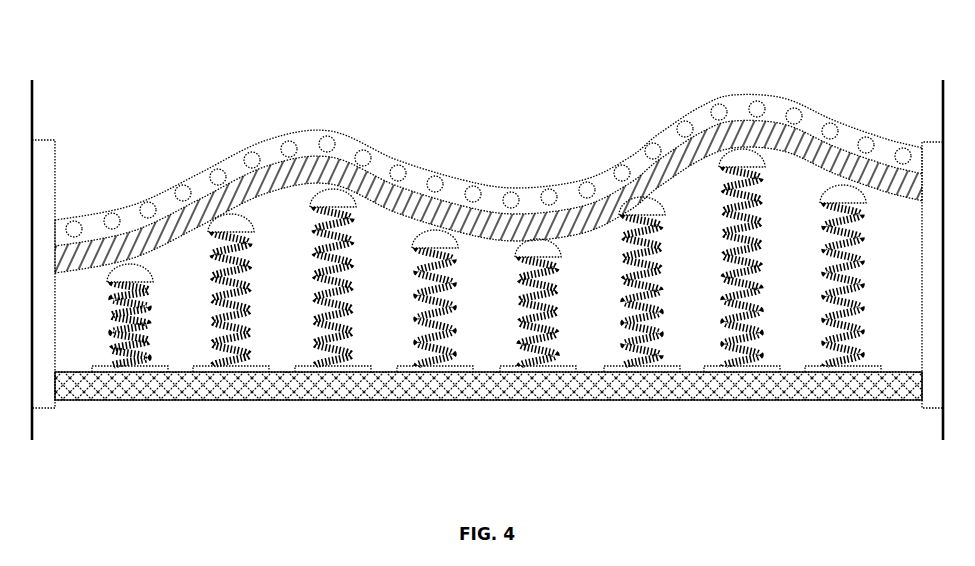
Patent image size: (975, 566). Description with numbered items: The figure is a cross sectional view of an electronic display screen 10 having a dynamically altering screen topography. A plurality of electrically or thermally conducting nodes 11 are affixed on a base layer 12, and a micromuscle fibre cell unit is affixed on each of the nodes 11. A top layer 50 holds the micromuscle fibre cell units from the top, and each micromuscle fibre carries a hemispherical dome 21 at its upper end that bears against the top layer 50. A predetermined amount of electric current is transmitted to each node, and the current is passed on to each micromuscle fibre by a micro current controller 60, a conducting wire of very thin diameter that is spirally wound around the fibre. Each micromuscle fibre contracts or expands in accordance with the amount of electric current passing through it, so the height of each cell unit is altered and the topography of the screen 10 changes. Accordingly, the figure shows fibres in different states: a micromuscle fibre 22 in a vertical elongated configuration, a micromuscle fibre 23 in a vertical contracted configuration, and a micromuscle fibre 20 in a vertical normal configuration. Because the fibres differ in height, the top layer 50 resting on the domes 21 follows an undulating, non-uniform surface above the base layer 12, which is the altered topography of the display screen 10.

The electronic display screen 10 is at (488, 170).
The top layer 50 is at (271, 168).
The hemispherical dome 21 is at (846, 188).
The micromuscle fibre in a vertical contracted configuration 23 is at (116, 347).
The base layer 12 is at (203, 379).
The electrically or thermally conducting nodes 11 is at (430, 374).
The micromuscle fibre in a vertical normal configuration 20 is at (516, 332).
The micromuscle fibre in a vertical elongated configuration 22 is at (732, 318).
The micro current controller 60 is at (835, 349).